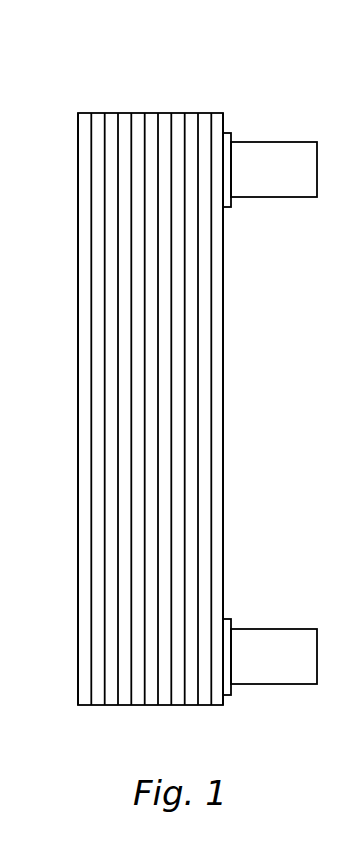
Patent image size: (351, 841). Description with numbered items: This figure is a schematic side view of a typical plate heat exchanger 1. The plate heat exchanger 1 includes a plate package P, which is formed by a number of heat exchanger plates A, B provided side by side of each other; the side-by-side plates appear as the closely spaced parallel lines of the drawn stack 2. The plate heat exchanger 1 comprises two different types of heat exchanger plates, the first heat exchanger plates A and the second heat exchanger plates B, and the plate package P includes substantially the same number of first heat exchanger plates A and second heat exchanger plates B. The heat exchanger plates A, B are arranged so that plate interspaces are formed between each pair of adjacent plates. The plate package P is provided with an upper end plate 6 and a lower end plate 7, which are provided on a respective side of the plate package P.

The plate heat exchanger 1 is at (173, 357).
The stack of plates 2 is at (127, 113).
The plate package P is at (221, 119).
The first heat exchanger plate A is at (198, 296).
The second heat exchanger plate B is at (186, 329).
The upper end plate 6 is at (218, 362).
The lower end plate 7 is at (80, 497).